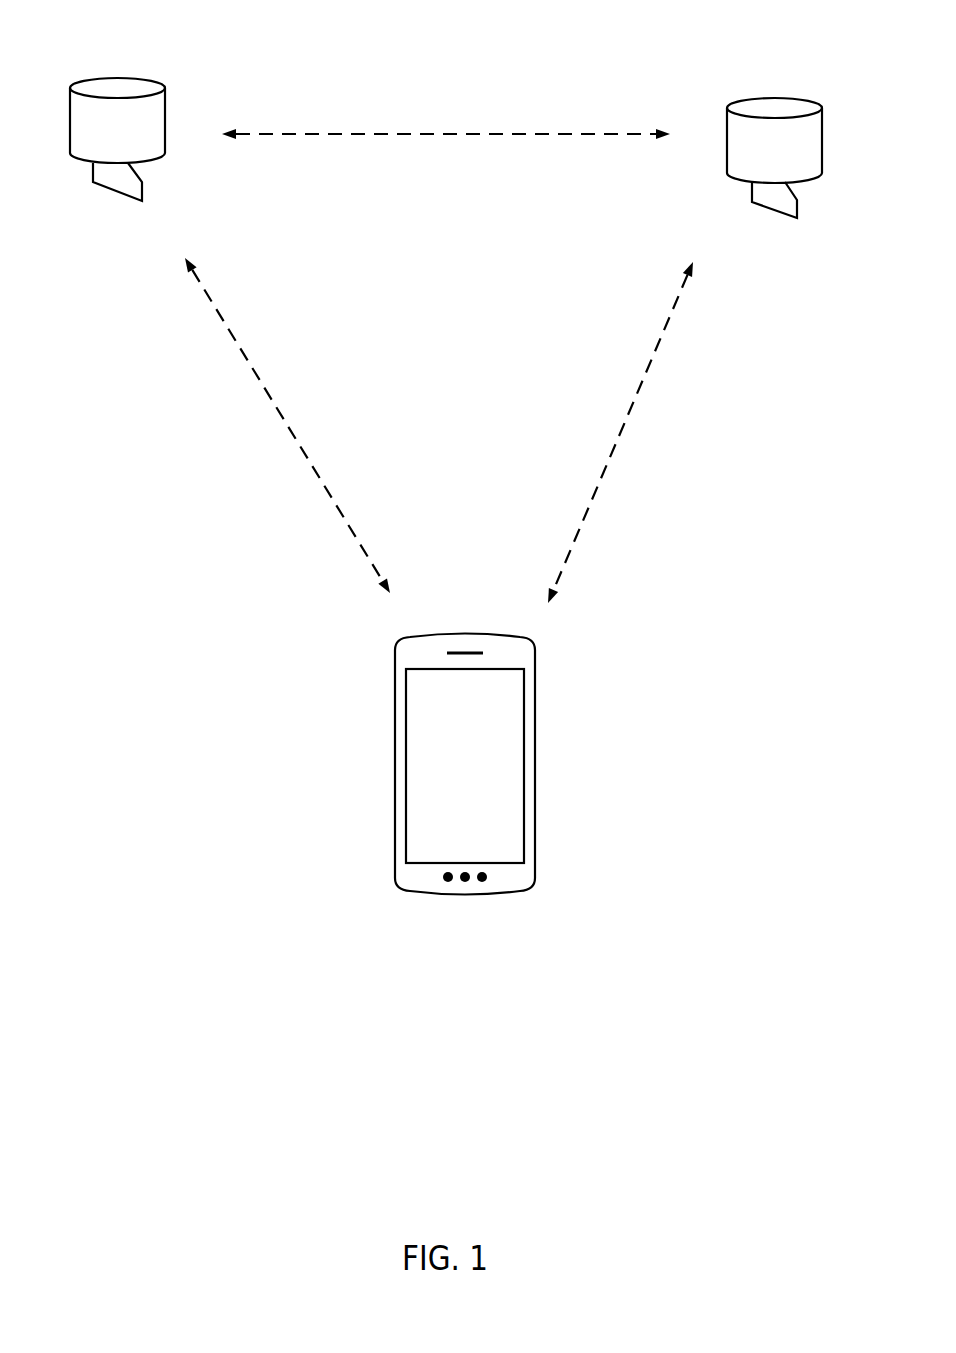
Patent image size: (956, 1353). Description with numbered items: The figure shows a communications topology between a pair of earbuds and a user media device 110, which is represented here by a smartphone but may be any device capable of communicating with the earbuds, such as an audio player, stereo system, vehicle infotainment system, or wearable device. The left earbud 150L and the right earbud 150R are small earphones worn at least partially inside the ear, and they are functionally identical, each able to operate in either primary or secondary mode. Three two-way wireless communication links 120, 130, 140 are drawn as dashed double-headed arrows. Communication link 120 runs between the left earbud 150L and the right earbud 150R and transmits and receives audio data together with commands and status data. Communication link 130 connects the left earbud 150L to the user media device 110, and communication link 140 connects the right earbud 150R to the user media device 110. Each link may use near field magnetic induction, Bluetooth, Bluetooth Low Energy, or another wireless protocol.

The user media device 110 is at (540, 733).
The communication link 120 is at (465, 133).
The communication link 130 is at (287, 420).
The communication link 140 is at (630, 413).
The left earbud 150L is at (118, 88).
The right earbud 150R is at (765, 105).